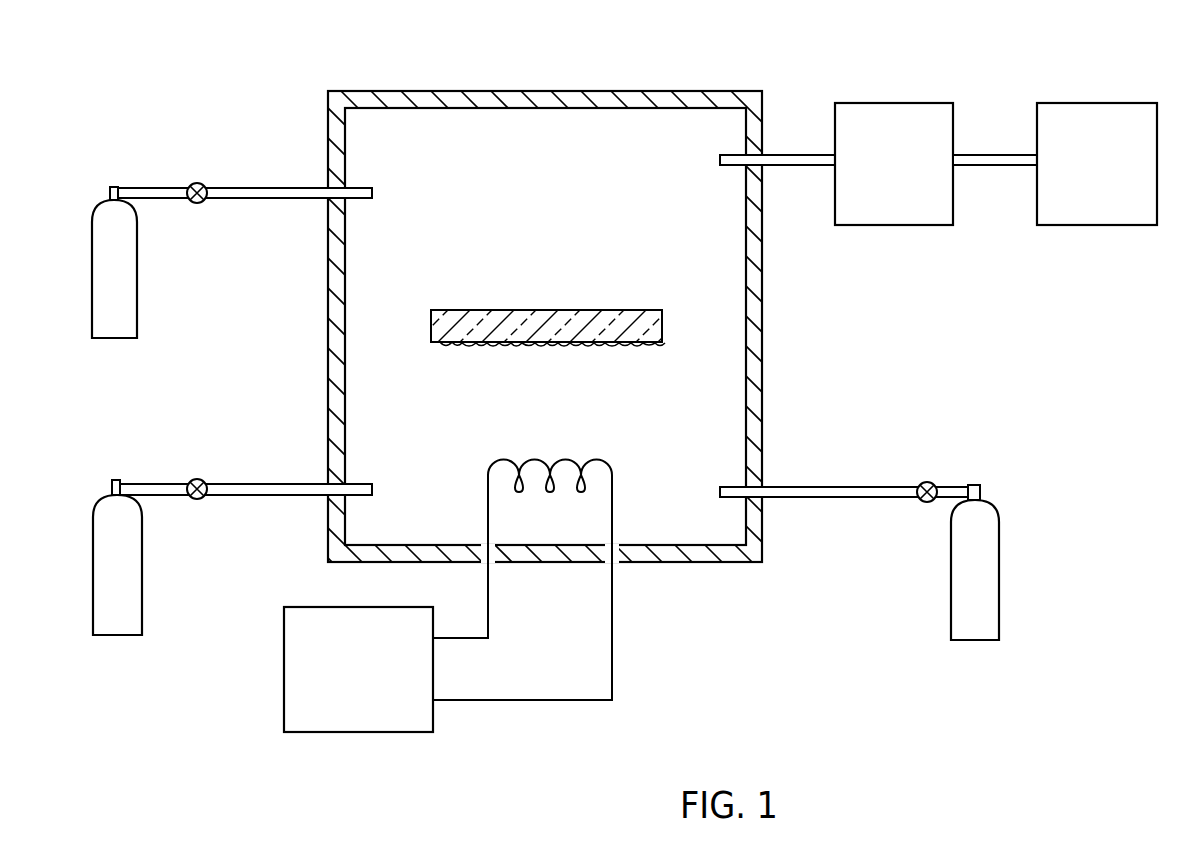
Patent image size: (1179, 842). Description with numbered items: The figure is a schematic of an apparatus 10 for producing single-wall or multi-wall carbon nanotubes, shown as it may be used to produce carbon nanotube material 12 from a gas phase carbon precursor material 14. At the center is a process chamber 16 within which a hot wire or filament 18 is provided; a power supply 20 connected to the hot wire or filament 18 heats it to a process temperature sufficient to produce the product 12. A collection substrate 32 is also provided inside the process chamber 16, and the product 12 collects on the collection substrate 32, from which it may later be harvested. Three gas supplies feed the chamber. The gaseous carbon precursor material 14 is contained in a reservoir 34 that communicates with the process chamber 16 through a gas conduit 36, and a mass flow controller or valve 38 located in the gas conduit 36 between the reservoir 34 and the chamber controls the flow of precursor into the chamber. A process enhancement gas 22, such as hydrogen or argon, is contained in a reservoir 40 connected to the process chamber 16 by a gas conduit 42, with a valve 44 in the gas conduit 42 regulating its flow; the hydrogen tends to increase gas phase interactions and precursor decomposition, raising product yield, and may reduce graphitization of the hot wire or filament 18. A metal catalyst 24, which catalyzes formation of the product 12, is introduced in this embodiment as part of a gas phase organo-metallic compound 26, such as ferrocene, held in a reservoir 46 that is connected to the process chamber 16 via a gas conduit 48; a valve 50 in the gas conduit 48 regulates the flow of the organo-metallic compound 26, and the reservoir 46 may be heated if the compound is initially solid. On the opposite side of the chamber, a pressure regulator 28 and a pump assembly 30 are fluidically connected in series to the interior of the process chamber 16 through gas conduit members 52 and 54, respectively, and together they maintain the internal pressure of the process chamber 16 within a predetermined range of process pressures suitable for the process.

The apparatus 10 is at (248, 90).
The carbon nanotube material 12 is at (588, 349).
The gas phase carbon precursor material 14 is at (132, 593).
The process chamber 16 is at (500, 91).
The hot wire or filament 18 is at (492, 460).
The power supply 20 is at (348, 733).
The process enhancement gas 22 is at (132, 290).
The metal catalyst 24 is at (948, 547).
The gas phase organo-metallic compound 26 is at (990, 592).
The pressure regulator 28 is at (908, 226).
The pump assembly 30 is at (1110, 226).
The collection substrate 32 is at (556, 309).
The reservoir 34 is at (93, 550).
The gas conduit 36 is at (278, 497).
The mass flow controller or valve 38 is at (192, 480).
The reservoir 40 is at (92, 232).
The gas conduit 42 is at (265, 200).
The valve 44 is at (193, 183).
The reservoir 46 is at (1000, 626).
The gas conduit 48 is at (852, 487).
The valve 50 is at (918, 481).
The gas conduit member 52 is at (785, 153).
The gas conduit member 54 is at (992, 153).